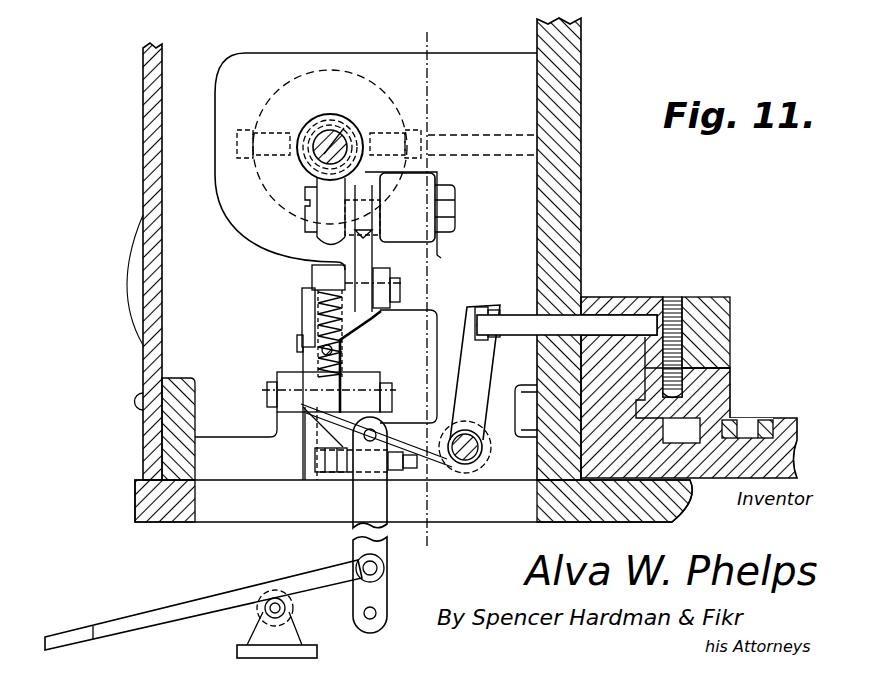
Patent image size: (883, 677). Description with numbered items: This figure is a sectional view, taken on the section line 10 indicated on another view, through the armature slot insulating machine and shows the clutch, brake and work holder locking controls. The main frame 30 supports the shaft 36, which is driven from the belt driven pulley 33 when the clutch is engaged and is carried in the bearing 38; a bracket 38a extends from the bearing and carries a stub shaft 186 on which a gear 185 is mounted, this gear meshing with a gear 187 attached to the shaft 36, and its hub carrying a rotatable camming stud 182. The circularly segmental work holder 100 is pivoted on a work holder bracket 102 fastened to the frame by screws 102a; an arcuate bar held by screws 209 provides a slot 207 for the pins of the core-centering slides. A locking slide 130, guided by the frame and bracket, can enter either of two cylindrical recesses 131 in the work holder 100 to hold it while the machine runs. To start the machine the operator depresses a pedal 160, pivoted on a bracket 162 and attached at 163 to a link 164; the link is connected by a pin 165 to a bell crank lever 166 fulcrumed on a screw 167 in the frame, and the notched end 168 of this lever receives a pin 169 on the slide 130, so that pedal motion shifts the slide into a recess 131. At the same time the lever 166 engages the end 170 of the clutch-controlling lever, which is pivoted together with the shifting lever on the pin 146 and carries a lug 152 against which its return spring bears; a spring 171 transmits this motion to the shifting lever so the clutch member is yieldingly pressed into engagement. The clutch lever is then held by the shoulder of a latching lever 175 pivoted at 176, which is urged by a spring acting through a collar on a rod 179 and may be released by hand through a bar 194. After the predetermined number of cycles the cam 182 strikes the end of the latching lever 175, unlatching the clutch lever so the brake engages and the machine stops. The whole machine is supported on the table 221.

The section line 10 is at (427, 545).
The main frame 30 is at (552, 195).
The belt driven pulley 33 is at (133, 265).
The shaft 36 is at (337, 132).
The bearing 38 is at (273, 60).
The bracket 38a is at (438, 187).
The work holder 100 is at (719, 391).
The work holder bracket 102 is at (608, 300).
The screws 102a is at (514, 427).
The slide 130 is at (520, 315).
The cylindrical recesses 131 is at (666, 305).
The pin 146 is at (267, 390).
The lug 152 is at (297, 340).
The pedal 160 is at (186, 614).
The bracket 162 is at (295, 633).
The attachment point 163 is at (378, 568).
The link 164 is at (360, 511).
The pin 165 is at (345, 436).
The bell crank lever 166 is at (413, 427).
The screw 167 is at (468, 464).
The notched end 168 is at (485, 305).
The pin 169 is at (491, 333).
The end of lever 170 is at (351, 406).
The spring 171 is at (318, 313).
The latching lever 175 is at (373, 321).
The pivot 176 is at (402, 285).
The rod 179 is at (321, 350).
The camming stud 182 is at (373, 232).
The gear 185 is at (312, 233).
The stub shaft 186 is at (303, 200).
The gear 187 is at (316, 124).
The bar 194 is at (405, 472).
The slot 207 is at (740, 424).
The screws 209 is at (770, 418).
The table 221 is at (190, 522).